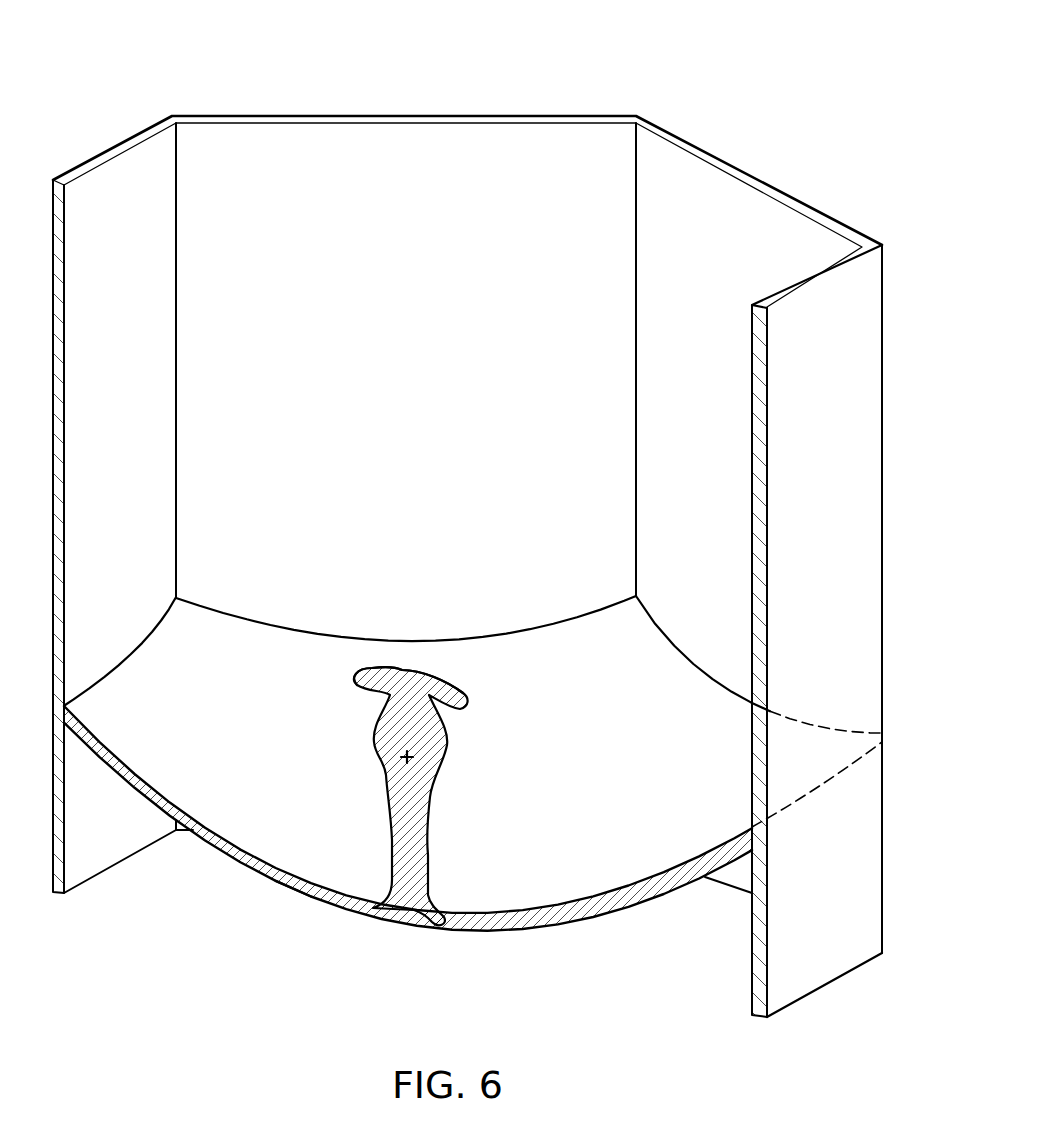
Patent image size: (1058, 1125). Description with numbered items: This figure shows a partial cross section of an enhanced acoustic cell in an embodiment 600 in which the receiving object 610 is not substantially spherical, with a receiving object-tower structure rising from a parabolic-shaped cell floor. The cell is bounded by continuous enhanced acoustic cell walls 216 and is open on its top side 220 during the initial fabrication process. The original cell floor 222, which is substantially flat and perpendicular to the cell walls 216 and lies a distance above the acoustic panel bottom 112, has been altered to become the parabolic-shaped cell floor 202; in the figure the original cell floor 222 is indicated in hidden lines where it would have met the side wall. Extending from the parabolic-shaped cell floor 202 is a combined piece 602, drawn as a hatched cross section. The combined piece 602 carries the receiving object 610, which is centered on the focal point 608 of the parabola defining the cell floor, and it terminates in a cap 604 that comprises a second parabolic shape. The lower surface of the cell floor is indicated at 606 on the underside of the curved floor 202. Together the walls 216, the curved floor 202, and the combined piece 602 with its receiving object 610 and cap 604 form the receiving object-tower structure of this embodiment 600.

The refrigeration assembly 600 is at (708, 106).
The top side 220 is at (378, 115).
The continuous enhanced acoustic cell walls 216 is at (872, 404).
The original cell floor 222 is at (878, 738).
The acoustic panel bottom 112 is at (858, 969).
The parabolic-shaped cell floor 202 is at (628, 890).
The combined piece 602 is at (470, 663).
The cap 604 is at (387, 688).
The focal point 608 is at (401, 757).
The receiving object 610 is at (577, 715).
The underside surface 606 is at (305, 886).